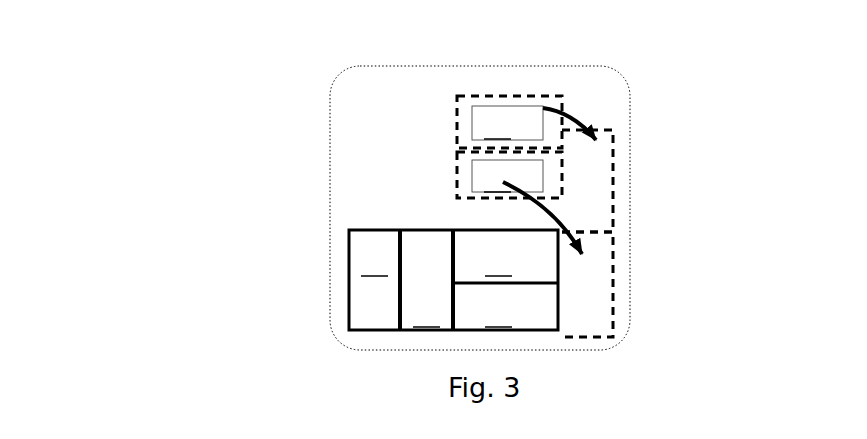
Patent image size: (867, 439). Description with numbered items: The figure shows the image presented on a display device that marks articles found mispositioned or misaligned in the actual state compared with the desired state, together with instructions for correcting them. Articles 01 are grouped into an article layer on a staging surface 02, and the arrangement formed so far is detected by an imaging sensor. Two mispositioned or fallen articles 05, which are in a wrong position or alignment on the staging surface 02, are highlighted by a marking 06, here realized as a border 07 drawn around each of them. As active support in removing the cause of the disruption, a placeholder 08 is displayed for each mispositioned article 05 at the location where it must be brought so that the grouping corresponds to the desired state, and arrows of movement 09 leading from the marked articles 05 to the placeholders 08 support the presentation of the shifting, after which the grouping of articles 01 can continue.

The article 01 is at (453, 223).
The staging surface 02 is at (327, 117).
The mispositioned or fallen article 05 is at (555, 96).
The marking 06 is at (440, 127).
The border 07 is at (455, 106).
The placeholder 08 is at (595, 204).
The arrow of movement 09 is at (600, 122).